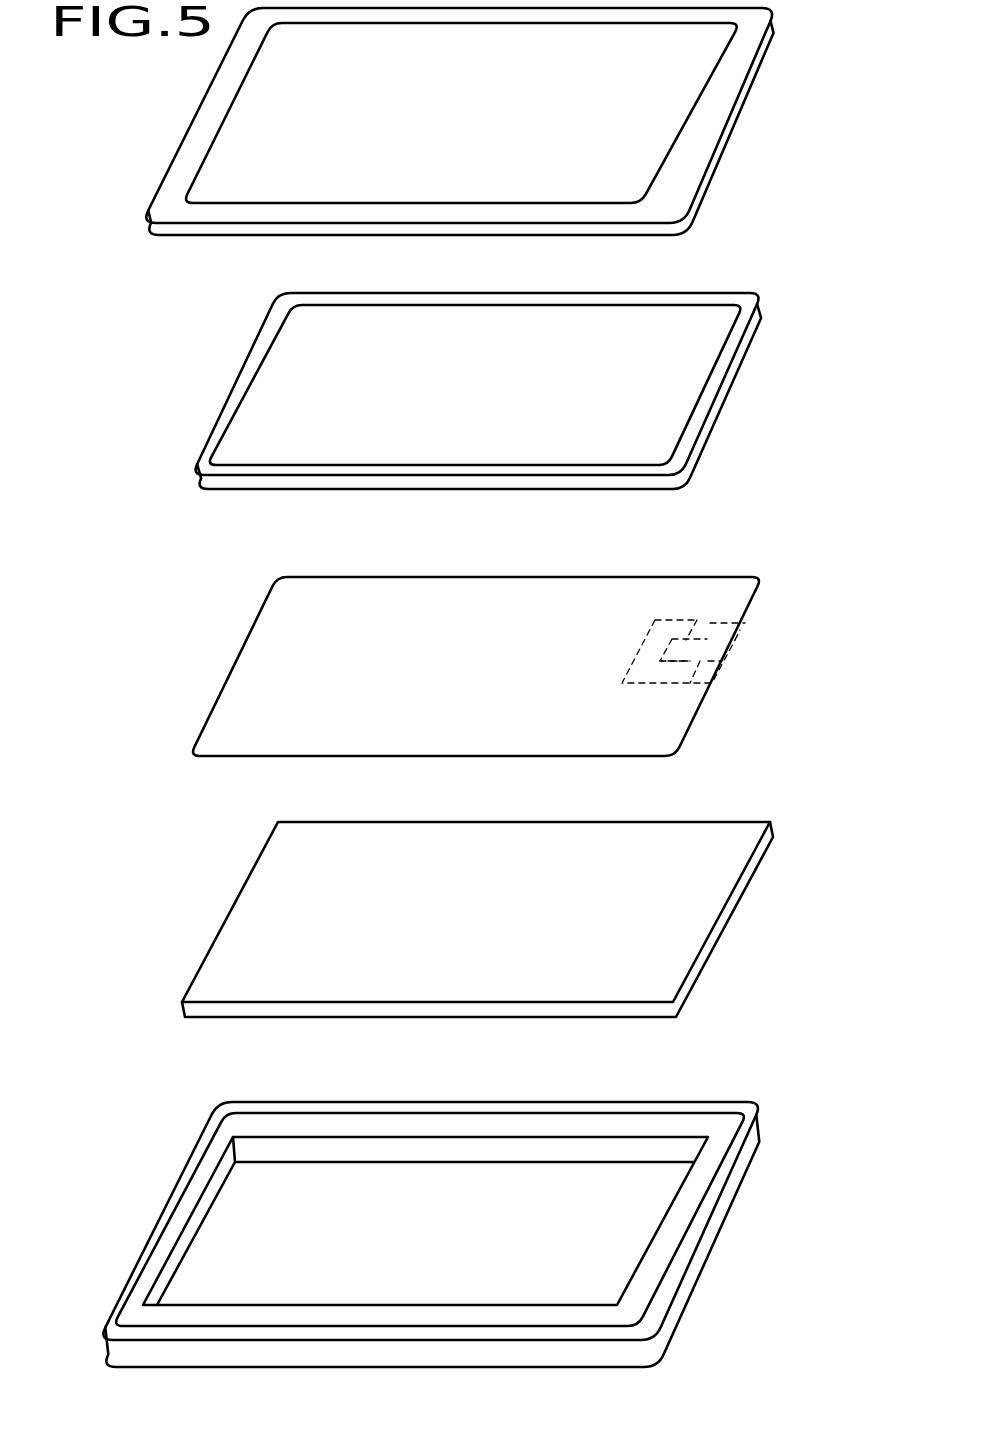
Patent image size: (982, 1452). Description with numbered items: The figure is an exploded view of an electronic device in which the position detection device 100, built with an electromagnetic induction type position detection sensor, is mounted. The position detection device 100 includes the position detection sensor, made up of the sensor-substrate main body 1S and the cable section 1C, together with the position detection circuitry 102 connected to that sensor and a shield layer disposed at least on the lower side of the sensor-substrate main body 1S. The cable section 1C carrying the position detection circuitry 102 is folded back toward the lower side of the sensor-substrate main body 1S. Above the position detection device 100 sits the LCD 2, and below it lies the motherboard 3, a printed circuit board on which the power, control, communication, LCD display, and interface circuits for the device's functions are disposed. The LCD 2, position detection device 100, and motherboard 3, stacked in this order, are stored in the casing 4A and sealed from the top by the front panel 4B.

The front panel 4B is at (735, 115).
The LCD 2 is at (657, 320).
The position detection device 100 is at (498, 641).
The sensor-substrate main body 1S is at (425, 590).
The position detection circuitry 102 is at (672, 622).
The cable section 1C is at (726, 680).
The motherboard 3 is at (743, 893).
The casing 4A is at (742, 1182).